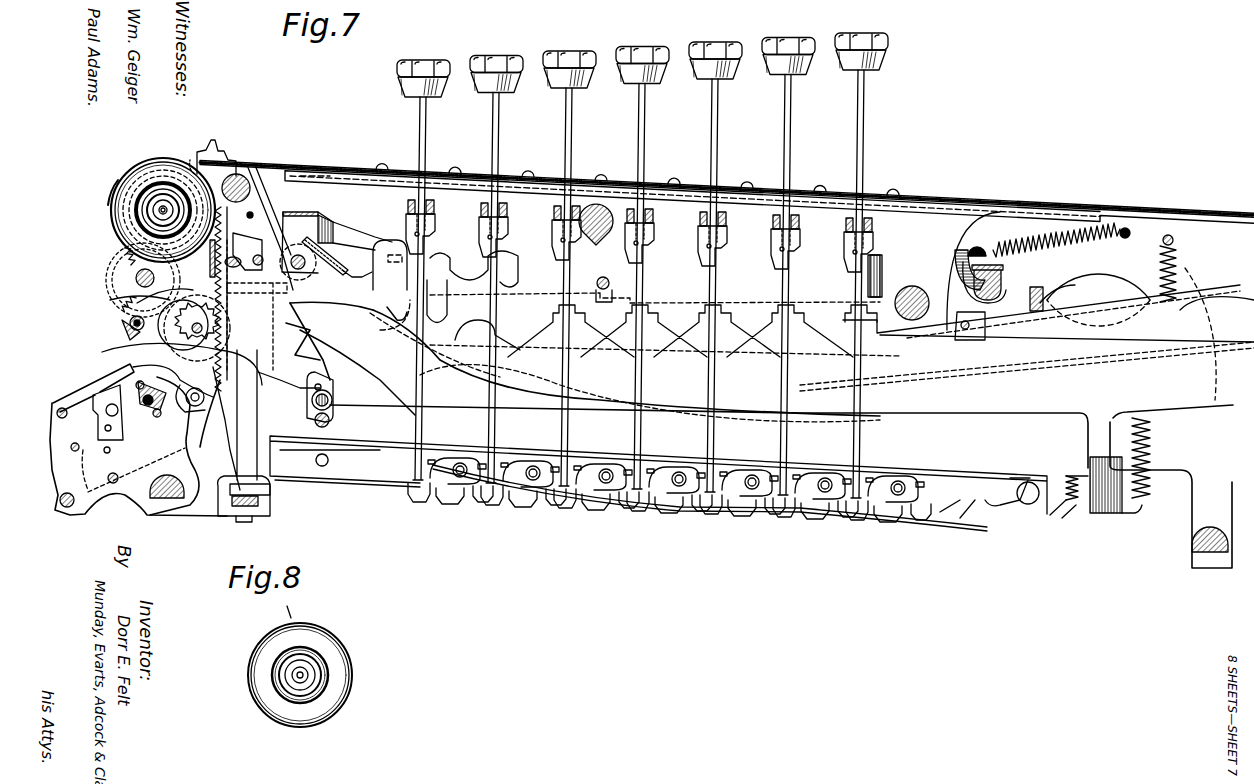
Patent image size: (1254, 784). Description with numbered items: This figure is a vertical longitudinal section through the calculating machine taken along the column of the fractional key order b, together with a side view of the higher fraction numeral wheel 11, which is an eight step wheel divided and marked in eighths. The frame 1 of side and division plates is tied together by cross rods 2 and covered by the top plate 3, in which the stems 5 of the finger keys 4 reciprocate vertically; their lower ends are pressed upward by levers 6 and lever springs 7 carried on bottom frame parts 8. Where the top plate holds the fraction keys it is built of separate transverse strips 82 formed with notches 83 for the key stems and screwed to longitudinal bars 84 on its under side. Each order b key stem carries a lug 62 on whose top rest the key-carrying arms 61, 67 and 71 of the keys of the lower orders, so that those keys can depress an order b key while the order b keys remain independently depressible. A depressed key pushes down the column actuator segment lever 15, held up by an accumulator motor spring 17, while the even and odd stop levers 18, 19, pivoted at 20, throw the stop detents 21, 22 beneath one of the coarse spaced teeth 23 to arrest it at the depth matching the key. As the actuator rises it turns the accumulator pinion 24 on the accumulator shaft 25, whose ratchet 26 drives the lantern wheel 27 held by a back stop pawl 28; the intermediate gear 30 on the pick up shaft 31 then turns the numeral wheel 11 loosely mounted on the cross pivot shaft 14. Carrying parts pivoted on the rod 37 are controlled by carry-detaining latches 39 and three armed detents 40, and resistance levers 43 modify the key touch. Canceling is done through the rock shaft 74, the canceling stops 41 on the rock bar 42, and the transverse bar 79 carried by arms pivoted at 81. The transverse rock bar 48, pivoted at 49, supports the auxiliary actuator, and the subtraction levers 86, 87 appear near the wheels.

In FIG. 7, the frame 1 is at (1060, 262).
In FIG. 7, the cross or tie rods 2 is at (1004, 282).
In FIG. 7, the top plate 3 is at (960, 198).
In FIG. 7, the finger keys 4 is at (444, 62).
In FIG. 7, the key stems 5 is at (478, 118).
In FIG. 7, the levers 6 is at (950, 490).
In FIG. 7, the lever springs 7 is at (960, 518).
In FIG. 7, the bottom frame parts 8 is at (368, 474).
In FIG. 7, the fraction numeral wheel 11 is at (118, 212).
In FIG. 8, the fraction numeral wheel 11 is at (352, 683).
In FIG. 7, the cross pivot shaft 14 is at (163, 205).
In FIG. 7, the column actuator segment lever 15 is at (1012, 412).
In FIG. 7, the accumulator motor springs 17 is at (1140, 506).
In FIG. 7, the even stop lever 18 is at (1216, 290).
In FIG. 7, the odd stop lever 19 is at (1160, 295).
In FIG. 7, the stop lever pivot 20 is at (295, 256).
In FIG. 7, the stop detent 21 is at (334, 404).
In FIG. 7, the stop detent 22 is at (330, 422).
In FIG. 7, the coarse spaced teeth 23 is at (296, 396).
In FIG. 7, the accumulator pinions 24 is at (160, 337).
In FIG. 7, the cross pivot accumulator shaft 25 is at (192, 322).
In FIG. 7, the accumulator ratchets 26 is at (248, 392).
In FIG. 7, the lantern wheels 27 is at (205, 300).
In FIG. 7, the back stop pawl 28 is at (130, 307).
In FIG. 7, the intermediate gears 30 is at (124, 262).
In FIG. 7, the intermediate pick up shaft 31 is at (136, 277).
In FIG. 7, the cross pivot shaft or rod 37 is at (121, 325).
In FIG. 7, the carry-detaining latches 39 is at (96, 375).
In FIG. 7, the three armed detents 40 is at (100, 440).
In FIG. 7, the canceling stops 41 is at (265, 492).
In FIG. 7, the rock bar 42 is at (262, 506).
In FIG. 7, the resistance levers 43 is at (958, 262).
In FIG. 7, the transverse rock bar 48 is at (1028, 304).
In FIG. 7, the rock bar pivot 49 is at (1060, 288).
In FIG. 7, the key-carrying arm 61 is at (846, 234).
In FIG. 7, the lug or shoulder 62 is at (877, 242).
In FIG. 7, the key-carrying arm 67 is at (874, 226).
In FIG. 7, the key-carrying arm 71 is at (851, 222).
In FIG. 7, the cross rock shaft 74 is at (916, 296).
In FIG. 7, the transverse bar 79 is at (882, 268).
In FIG. 7, the cross rod 81 is at (603, 276).
In FIG. 7, the strips 82 is at (604, 177).
In FIG. 7, the notches 83 is at (480, 172).
In FIG. 7, the longitudinal bars 84 is at (372, 186).
In FIG. 7, the subtraction lever 86 is at (212, 140).
In FIG. 7, the subtraction lever 87 is at (208, 150).
In FIG. 7, the key order b is at (638, 60).